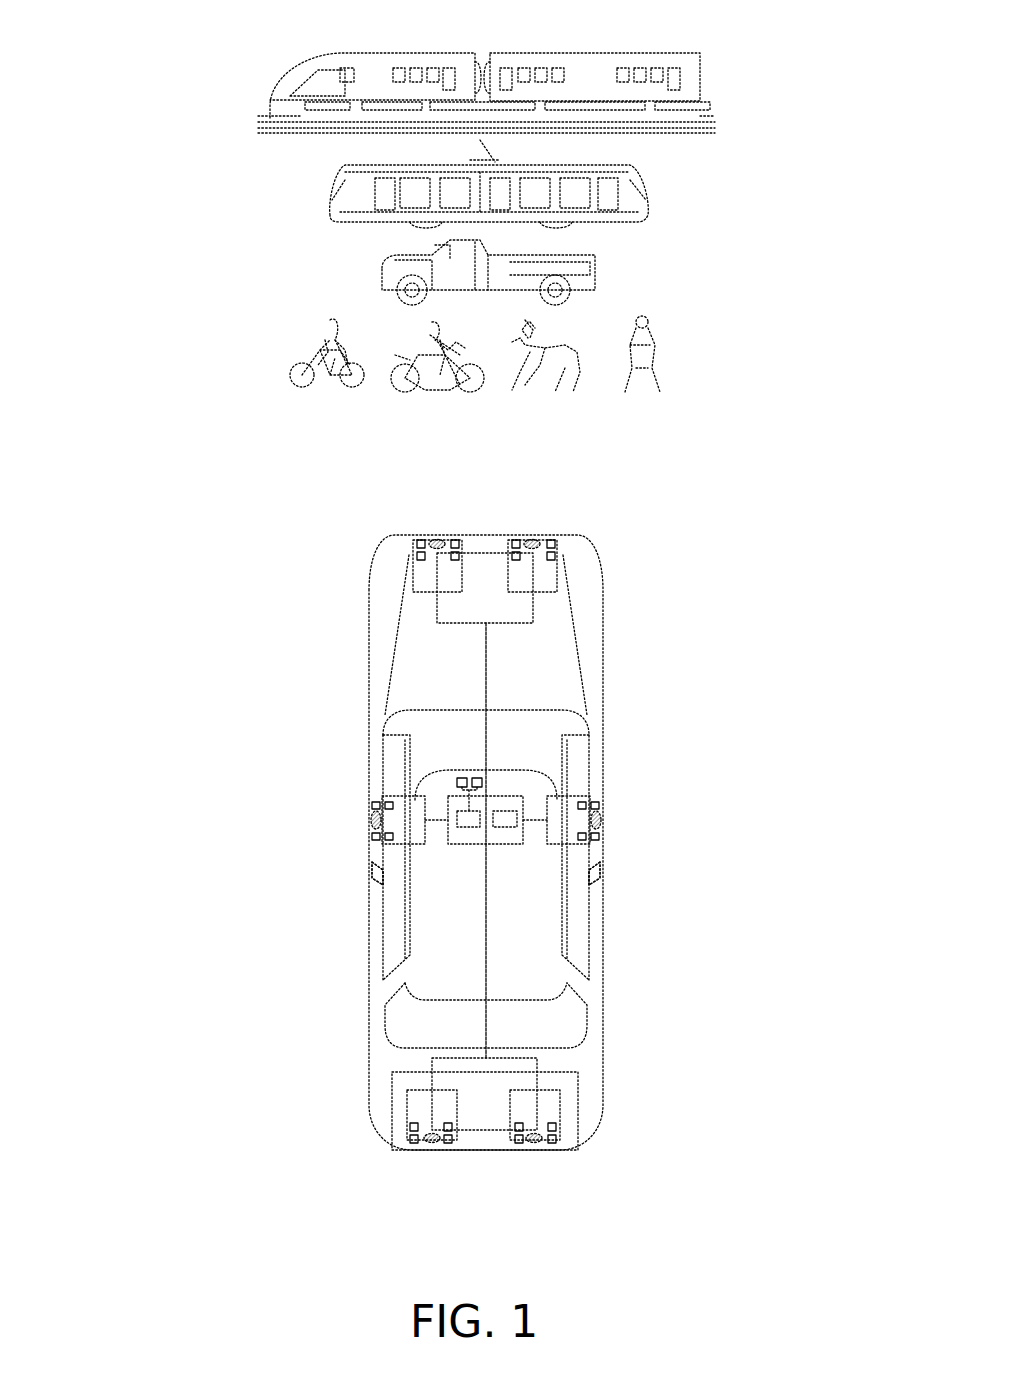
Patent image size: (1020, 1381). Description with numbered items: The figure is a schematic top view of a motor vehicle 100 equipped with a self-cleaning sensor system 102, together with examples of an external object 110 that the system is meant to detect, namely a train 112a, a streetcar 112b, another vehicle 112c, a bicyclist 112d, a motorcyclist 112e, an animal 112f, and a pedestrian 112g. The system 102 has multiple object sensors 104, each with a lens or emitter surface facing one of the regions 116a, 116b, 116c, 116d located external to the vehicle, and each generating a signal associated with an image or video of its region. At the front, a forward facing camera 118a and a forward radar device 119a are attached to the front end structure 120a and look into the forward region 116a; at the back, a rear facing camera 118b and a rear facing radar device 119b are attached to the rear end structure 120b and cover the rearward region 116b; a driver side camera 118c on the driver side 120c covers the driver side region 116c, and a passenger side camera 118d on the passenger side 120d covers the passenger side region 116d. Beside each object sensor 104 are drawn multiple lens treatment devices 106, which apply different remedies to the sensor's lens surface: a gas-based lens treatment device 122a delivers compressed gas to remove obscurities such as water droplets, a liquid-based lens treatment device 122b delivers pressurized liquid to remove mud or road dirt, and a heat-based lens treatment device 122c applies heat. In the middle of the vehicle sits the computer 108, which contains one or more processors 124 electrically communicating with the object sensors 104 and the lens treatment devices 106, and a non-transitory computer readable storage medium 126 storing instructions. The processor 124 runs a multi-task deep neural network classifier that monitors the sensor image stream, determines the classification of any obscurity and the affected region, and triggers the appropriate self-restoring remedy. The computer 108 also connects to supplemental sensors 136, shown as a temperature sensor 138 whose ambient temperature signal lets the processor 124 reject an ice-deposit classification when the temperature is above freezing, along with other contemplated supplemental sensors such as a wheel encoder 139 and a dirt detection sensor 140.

The motor vehicle 100 is at (366, 647).
The self-cleaning sensor system 102 is at (478, 880).
The object sensors 104 is at (484, 841).
The lens treatment devices 106 is at (491, 839).
The computer 108 is at (493, 816).
The object 110 is at (492, 228).
The train 112a is at (362, 55).
The streetcar 112b is at (370, 165).
The another vehicle 112c is at (390, 268).
The bicyclist 112d is at (330, 318).
The motorcyclist 112e is at (393, 384).
The animal 112f is at (560, 392).
The pedestrian 112g is at (645, 315).
The forward region 116a is at (505, 334).
The rearward region 116b is at (488, 1262).
The driver side region 116c is at (305, 839).
The passenger side region 116d is at (700, 837).
The forward facing camera 118a is at (428, 540).
The rear facing camera 118b is at (429, 1145).
The driver side camera 118c is at (372, 818).
The passenger side camera 118d is at (600, 818).
The forward radar device 119a is at (536, 540).
The rear facing radar device 119b is at (538, 1143).
The front end structure 120a is at (498, 615).
The rear end structure 120b is at (510, 1126).
The driver side 120c is at (377, 890).
The passenger side 120d is at (597, 888).
The gas-based lens treatment device 122a is at (419, 540).
The liquid-based lens treatment device 122b is at (455, 540).
The heat-based lens treatment device 122c is at (418, 563).
The processor 124 is at (473, 828).
The non-transitory computer readable storage medium 126 is at (500, 828).
The supplemental sensors 136 is at (486, 845).
The temperature sensor 138 is at (462, 778).
The wheel encoder 139 is at (477, 778).
The dirt detection sensor 140 is at (445, 540).